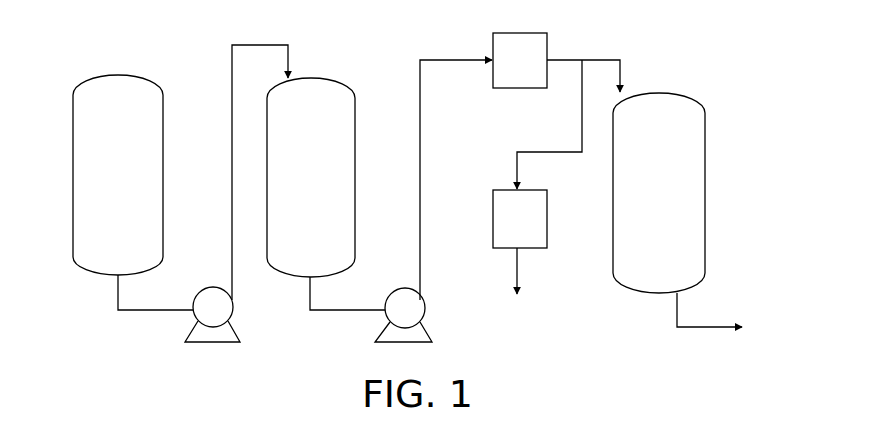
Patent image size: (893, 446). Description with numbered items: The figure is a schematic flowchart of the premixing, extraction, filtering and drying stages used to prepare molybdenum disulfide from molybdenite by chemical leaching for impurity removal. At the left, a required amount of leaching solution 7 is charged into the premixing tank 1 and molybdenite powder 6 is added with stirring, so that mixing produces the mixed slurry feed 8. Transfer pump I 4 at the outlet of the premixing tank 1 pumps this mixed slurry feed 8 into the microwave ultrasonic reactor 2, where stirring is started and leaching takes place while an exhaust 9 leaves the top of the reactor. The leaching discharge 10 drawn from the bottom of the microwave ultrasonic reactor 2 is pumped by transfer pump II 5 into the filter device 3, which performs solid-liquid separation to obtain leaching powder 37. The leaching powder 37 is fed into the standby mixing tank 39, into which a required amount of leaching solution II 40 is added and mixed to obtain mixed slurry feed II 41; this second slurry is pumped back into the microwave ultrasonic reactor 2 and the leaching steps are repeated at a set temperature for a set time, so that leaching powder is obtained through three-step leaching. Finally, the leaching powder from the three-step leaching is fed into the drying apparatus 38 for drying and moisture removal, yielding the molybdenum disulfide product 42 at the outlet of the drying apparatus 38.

The premixing tank 1 is at (133, 192).
The microwave ultrasonic reactor 2 is at (326, 194).
The filter device 3 is at (520, 60).
The transfer pump I 4 is at (212, 314).
The transfer pump II 5 is at (403, 315).
The molybdenite powder 6 is at (88, 78).
The leaching solution 7 is at (143, 78).
The feeding of mixed slurry 8 is at (269, 165).
The exhaust 9 is at (335, 78).
The leaching discharge 10 is at (456, 164).
The leaching powder 37 is at (568, 106).
The drying apparatus 38 is at (520, 219).
The standby mixing tank 39 is at (659, 193).
The leaching solution II 40 is at (685, 92).
The mixed slurry feed II 41 is at (727, 317).
The product 42 is at (519, 288).